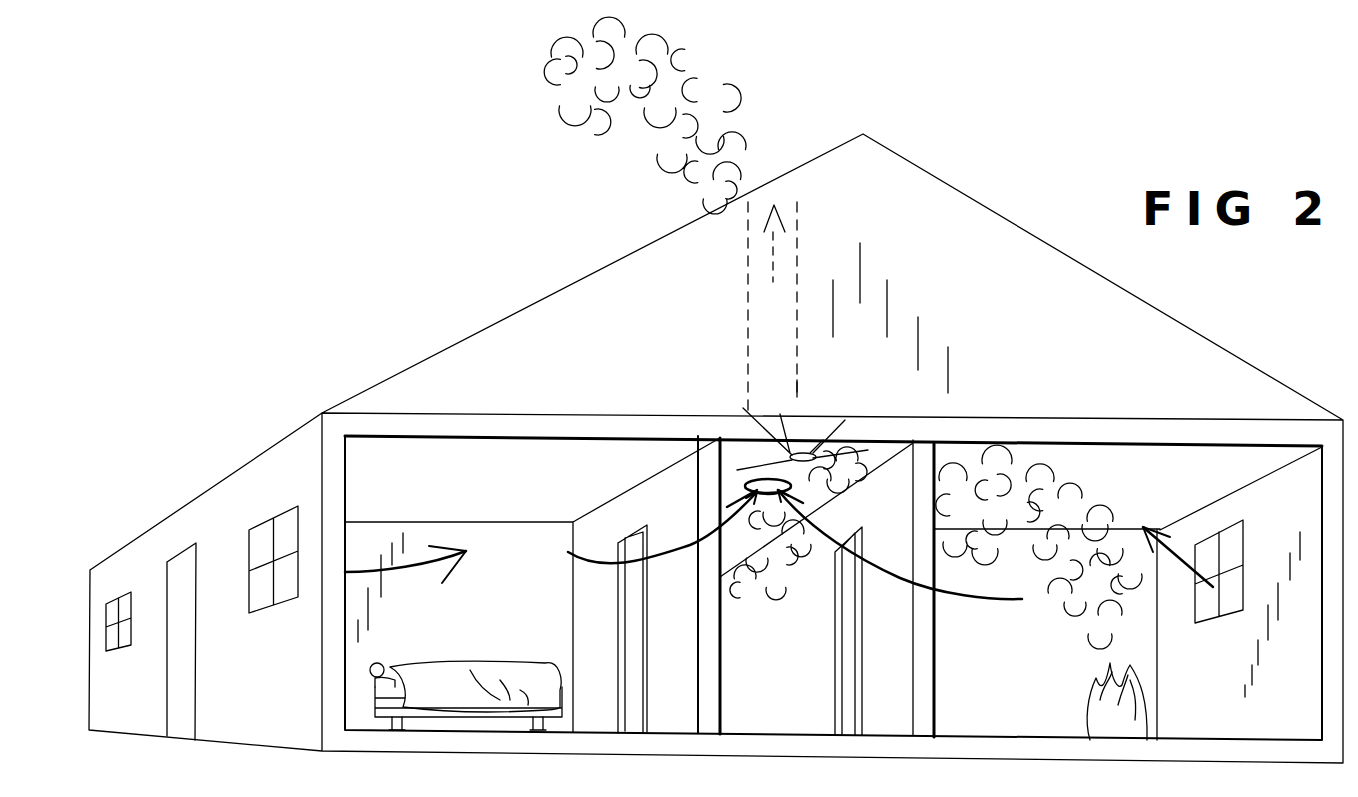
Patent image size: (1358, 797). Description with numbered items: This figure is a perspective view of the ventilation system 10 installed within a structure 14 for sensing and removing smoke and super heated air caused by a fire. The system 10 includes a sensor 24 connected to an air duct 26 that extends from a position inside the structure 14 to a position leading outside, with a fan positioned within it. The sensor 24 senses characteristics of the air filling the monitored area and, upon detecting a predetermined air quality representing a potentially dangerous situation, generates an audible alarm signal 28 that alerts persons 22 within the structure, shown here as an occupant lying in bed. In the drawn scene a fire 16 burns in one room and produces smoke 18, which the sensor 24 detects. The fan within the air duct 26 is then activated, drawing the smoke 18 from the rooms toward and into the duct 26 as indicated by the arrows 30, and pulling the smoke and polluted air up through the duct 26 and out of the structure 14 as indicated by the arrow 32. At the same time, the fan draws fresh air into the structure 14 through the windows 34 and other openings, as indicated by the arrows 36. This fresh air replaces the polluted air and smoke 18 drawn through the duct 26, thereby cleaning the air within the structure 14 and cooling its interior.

The ventilation system 10 is at (753, 450).
The structure 14 is at (472, 307).
The fire 16 is at (1110, 727).
The smoke 18 is at (1055, 600).
The persons 22 is at (397, 663).
The sensor 24 is at (803, 452).
The air duct 26 is at (795, 380).
The audible alarm signal 28 is at (841, 436).
The arrows indicating drawing of smoke into the air duct 30 is at (647, 560).
The arrow indicating smoke pulled through the duct 32 is at (773, 280).
The windows 34 is at (268, 520).
The arrows indicating fresh air drawn into the structure 36 is at (397, 568).